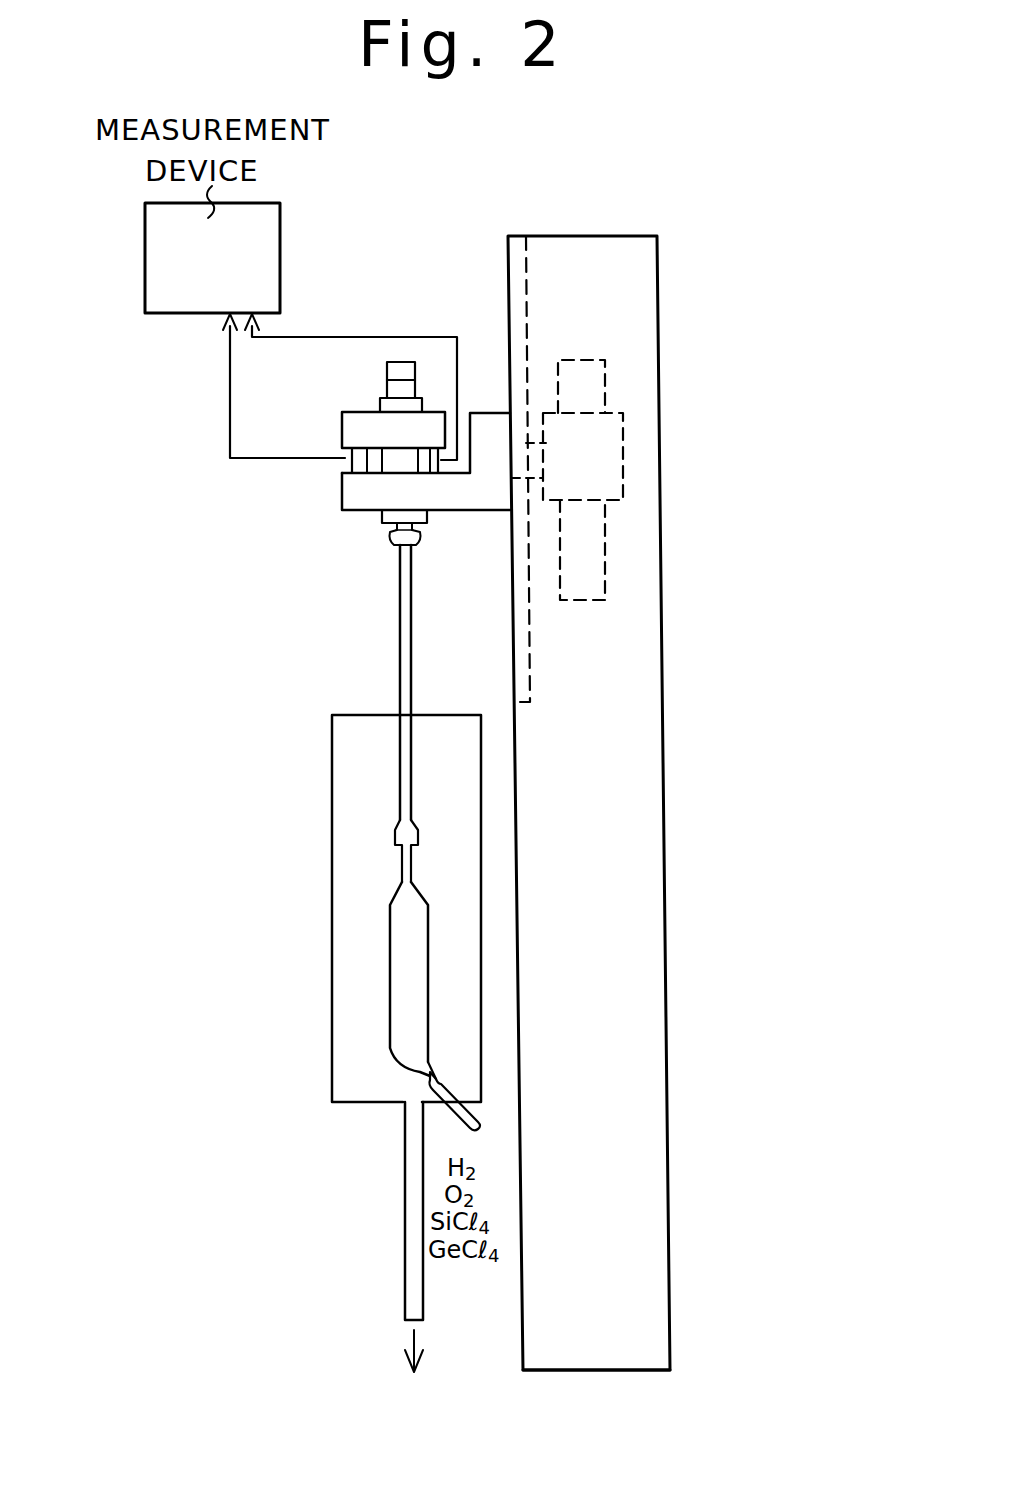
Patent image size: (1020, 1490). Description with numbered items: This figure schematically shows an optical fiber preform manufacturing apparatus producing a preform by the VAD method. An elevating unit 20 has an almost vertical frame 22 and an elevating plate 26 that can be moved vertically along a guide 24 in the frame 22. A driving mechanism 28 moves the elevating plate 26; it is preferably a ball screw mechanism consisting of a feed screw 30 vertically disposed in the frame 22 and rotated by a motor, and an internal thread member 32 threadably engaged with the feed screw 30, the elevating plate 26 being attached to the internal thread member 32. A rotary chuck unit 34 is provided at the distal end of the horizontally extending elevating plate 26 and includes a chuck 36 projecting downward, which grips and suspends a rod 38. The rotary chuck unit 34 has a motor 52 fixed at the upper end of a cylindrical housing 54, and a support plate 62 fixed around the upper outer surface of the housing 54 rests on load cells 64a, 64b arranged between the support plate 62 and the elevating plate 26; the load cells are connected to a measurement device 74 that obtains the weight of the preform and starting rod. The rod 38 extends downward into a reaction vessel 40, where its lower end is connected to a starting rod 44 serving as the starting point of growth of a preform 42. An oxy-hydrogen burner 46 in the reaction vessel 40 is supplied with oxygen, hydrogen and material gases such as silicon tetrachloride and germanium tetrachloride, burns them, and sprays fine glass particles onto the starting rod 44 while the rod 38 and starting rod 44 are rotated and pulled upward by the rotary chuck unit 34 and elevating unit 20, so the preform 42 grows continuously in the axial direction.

The elevating unit 20 is at (665, 307).
The frame 22 is at (624, 774).
The guide 24 is at (527, 272).
The elevating plate 26 is at (486, 486).
The driving mechanism 28 is at (627, 568).
The feed screw 30 is at (594, 546).
The internal thread member 32 is at (600, 446).
The rotary chuck unit 34 is at (378, 386).
The chuck 36 is at (393, 537).
The rod 38 is at (400, 648).
The reaction vessel 40 is at (332, 748).
The preform 42 is at (400, 945).
The starting rod 44 is at (400, 860).
The oxy-hydrogen burner 46 is at (486, 1143).
The motor 52 is at (403, 374).
The housing 54 is at (410, 406).
The support plate 62 is at (358, 420).
The load cell 64a is at (350, 465).
The load cell 64b is at (447, 476).
The measurement device 74 is at (238, 272).